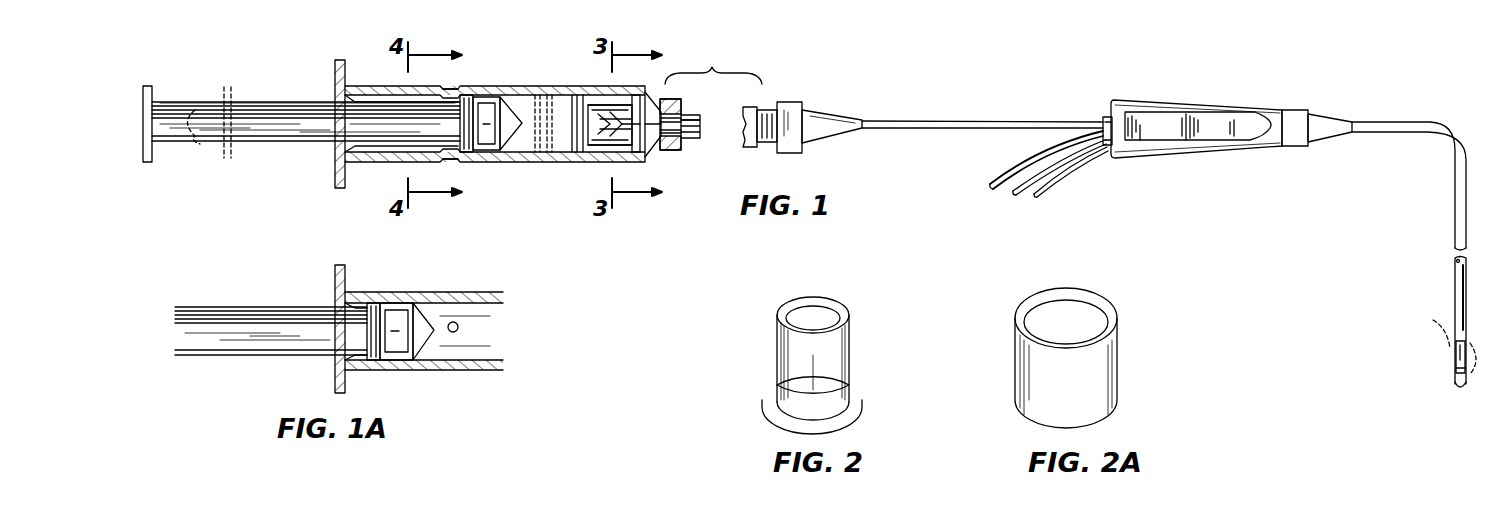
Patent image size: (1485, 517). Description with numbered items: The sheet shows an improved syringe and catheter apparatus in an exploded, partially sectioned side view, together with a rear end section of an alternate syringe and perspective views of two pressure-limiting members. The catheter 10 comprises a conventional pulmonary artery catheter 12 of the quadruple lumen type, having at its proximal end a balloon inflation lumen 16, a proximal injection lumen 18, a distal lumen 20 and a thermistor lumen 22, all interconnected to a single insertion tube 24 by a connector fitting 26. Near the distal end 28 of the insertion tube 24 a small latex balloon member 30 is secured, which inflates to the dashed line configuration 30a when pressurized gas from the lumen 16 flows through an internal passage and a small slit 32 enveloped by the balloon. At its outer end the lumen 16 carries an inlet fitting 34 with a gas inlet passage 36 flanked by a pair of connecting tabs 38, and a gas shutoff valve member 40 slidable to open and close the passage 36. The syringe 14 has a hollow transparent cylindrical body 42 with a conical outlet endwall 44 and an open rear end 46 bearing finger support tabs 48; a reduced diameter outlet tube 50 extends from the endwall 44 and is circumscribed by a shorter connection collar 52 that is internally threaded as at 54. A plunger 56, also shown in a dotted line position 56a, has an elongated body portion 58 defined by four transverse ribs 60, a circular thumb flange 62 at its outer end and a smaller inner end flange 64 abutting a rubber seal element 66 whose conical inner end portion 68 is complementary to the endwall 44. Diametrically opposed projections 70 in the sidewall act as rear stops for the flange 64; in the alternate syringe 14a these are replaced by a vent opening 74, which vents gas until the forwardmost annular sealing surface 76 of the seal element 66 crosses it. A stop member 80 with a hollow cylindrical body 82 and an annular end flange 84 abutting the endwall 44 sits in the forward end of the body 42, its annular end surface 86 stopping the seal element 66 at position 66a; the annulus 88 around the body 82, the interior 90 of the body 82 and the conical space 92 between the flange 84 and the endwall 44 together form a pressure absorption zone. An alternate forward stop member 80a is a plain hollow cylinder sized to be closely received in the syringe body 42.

In FIG. 1, the catheter 10 is at (870, 72).
In FIG. 1, the pulmonary artery catheter 12 is at (1185, 88).
In FIG. 1, the syringe 14 is at (378, 78).
In FIG. 1A, the alternate embodiment of the syringe 14a is at (468, 375).
In FIG. 1, the balloon inflation lumen 16 is at (955, 115).
In FIG. 1, the proximal injection lumen 18 is at (989, 186).
In FIG. 1, the distal lumen 20 is at (1014, 198).
In FIG. 1, the thermistor lumen 22 is at (1036, 199).
In FIG. 1, the insertion tube 24 is at (1452, 213).
In FIG. 1, the connector fitting 26 is at (1242, 150).
In FIG. 1, the distal end 28 is at (1460, 388).
In FIG. 1, the latex balloon member 30 is at (1458, 352).
In FIG. 1, the dashed line configuration 30a is at (1435, 327).
In FIG. 1, the slit 32 is at (1458, 366).
In FIG. 1, the inlet fitting 34 is at (828, 146).
In FIG. 1, the gas inlet passage 36 is at (745, 128).
In FIG. 1, the connecting tabs 38 is at (752, 108).
In FIG. 1, the gas shutoff valve member 40 is at (803, 100).
In FIG. 1, the syringe body 42 is at (378, 169).
In FIG. 1A, the syringe body 42 is at (473, 287).
In FIG. 1, the conical endwall 44 is at (661, 152).
In FIG. 1, the open rear end 46 is at (340, 150).
In FIG. 1A, the open rear end 46 is at (340, 355).
In FIG. 1, the finger support tabs 48 is at (336, 78).
In FIG. 1A, the finger support tabs 48 is at (336, 280).
In FIG. 1, the outlet tube 50 is at (682, 150).
In FIG. 1, the connection collar 52 is at (664, 100).
In FIG. 1, the internal threads 54 is at (686, 116).
In FIG. 1, the plunger 56 is at (285, 98).
In FIG. 1A, the plunger 56 is at (208, 304).
In FIG. 1, the dotted line position of the plunger 56a is at (228, 168).
In FIG. 1, the plunger body portion 58 is at (205, 100).
In FIG. 1, the transverse ribs 60 is at (197, 140).
In FIG. 1, the thumb flange 62 is at (152, 164).
In FIG. 1, the inner end flange 64 is at (467, 94).
In FIG. 1, the rubber seal element 66 is at (467, 157).
In FIG. 1A, the rubber seal element 66 is at (383, 364).
In FIG. 1, the stopped position of the seal element 66a is at (556, 158).
In FIG. 1, the conical inner end portion 68 is at (512, 158).
In FIG. 1A, the conical inner end portion 68 is at (428, 360).
In FIG. 1, the projections 70 is at (449, 85).
In FIG. 1A, the vent opening 74 is at (460, 327).
In FIG. 1A, the forwardmost annular sealing surface 76 is at (416, 300).
In FIG. 1, the stop member 80 is at (605, 146).
In FIG. 2, the stop member 80 is at (802, 349).
In FIG. 2A, the alternate forward stop member 80a is at (1120, 370).
In FIG. 1, the hollow cylindrical body 82 is at (622, 152).
In FIG. 2, the hollow cylindrical body 82 is at (776, 358).
In FIG. 1, the annular end flange 84 is at (638, 154).
In FIG. 2, the annular end flange 84 is at (764, 402).
In FIG. 1, the annular end surface 86 is at (600, 136).
In FIG. 2, the annular end surface 86 is at (838, 298).
In FIG. 1, the annulus 88 is at (612, 140).
In FIG. 1, the interior of the stop member body 90 is at (604, 118).
In FIG. 1, the conical space 92 is at (626, 145).